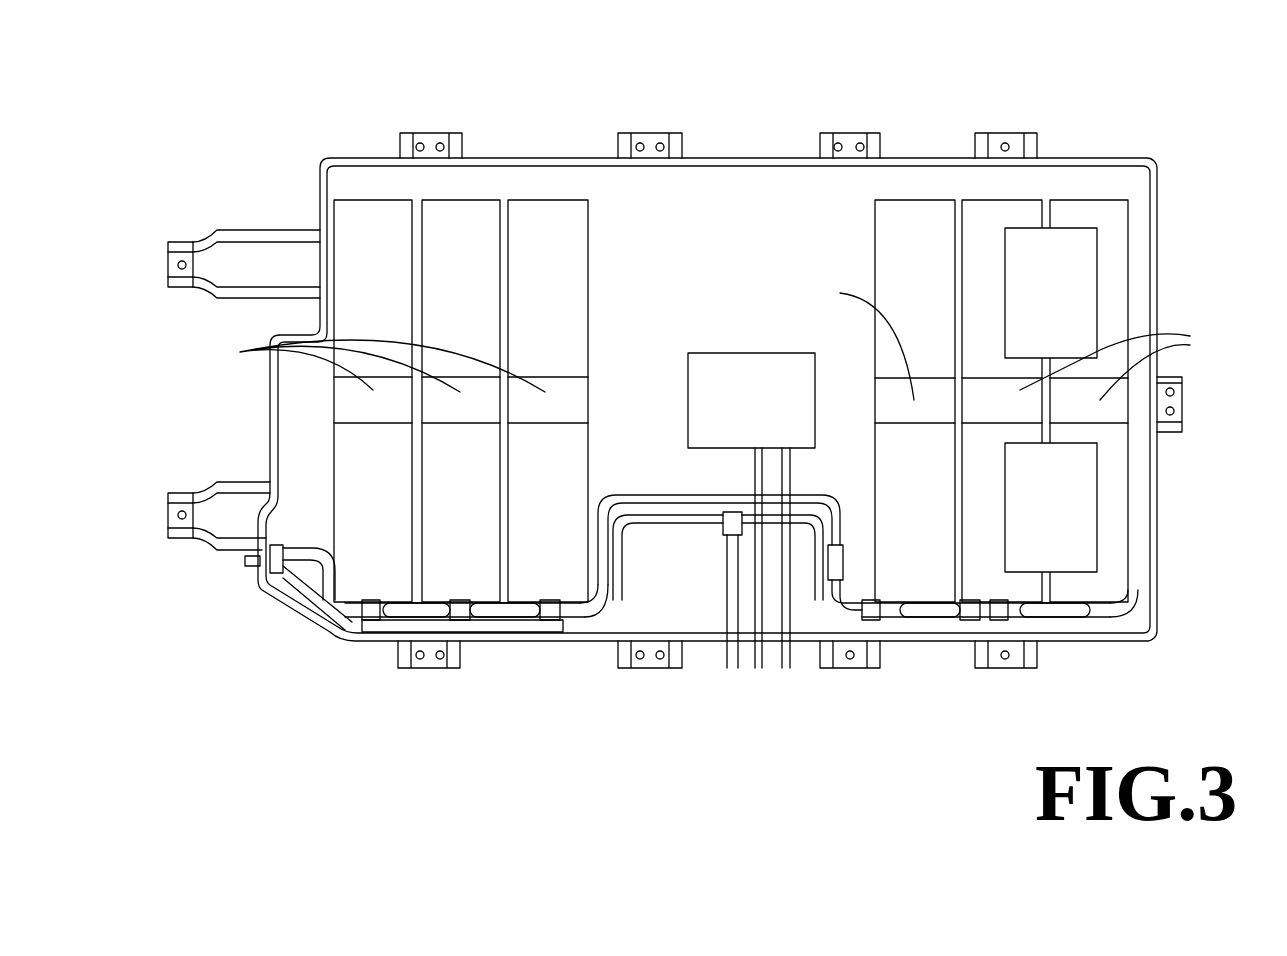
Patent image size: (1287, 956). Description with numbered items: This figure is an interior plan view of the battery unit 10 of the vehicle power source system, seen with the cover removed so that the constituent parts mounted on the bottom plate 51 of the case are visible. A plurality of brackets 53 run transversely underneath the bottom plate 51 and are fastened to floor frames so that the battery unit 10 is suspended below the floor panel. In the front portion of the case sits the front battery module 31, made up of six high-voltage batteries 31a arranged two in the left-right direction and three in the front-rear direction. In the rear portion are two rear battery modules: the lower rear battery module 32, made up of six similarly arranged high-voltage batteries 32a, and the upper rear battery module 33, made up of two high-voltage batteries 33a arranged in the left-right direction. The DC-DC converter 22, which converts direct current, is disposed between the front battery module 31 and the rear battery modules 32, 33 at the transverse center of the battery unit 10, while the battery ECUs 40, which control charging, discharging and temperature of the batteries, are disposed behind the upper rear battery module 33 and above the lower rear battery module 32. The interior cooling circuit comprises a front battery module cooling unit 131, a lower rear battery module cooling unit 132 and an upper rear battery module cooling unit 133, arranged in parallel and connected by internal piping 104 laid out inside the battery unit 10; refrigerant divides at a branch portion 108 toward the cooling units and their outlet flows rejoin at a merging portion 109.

The battery unit 10 is at (675, 351).
The bottom plate 51 is at (1130, 158).
The brackets 53 is at (627, 672).
The front battery module 31 is at (496, 347).
The high-voltage batteries 31a is at (482, 215).
The lower rear battery module 32 is at (1092, 347).
The high-voltage batteries 32a is at (998, 215).
The upper rear battery module 33 is at (880, 347).
The high-voltage batteries 33a is at (912, 215).
The battery ECUs 40 is at (1070, 265).
The DC-DC converter 22 is at (752, 353).
The front battery module cooling unit 131 is at (362, 366).
The lower rear battery module cooling unit 132 is at (1136, 361).
The upper rear battery module cooling unit 133 is at (850, 341).
The internal piping 104 is at (623, 593).
The branch portion 108 is at (302, 568).
The merging portion 109 is at (723, 532).